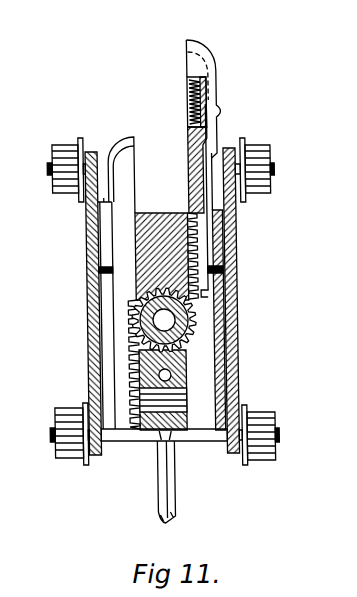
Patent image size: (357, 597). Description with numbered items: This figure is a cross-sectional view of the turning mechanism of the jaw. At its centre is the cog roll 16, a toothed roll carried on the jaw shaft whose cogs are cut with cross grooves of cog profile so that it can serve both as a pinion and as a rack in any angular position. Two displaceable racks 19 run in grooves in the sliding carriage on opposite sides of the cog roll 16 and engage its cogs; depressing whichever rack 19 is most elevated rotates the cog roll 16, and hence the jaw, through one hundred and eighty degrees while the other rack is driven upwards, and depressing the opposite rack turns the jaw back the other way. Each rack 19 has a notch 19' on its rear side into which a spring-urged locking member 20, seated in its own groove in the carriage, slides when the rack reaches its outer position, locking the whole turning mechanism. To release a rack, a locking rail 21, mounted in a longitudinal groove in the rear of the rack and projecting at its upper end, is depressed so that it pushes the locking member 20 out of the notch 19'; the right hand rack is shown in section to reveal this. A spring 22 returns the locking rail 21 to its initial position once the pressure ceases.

The cog roll 16 is at (177, 333).
The rack 19 is at (174, 277).
The notch 19' is at (116, 314).
The locking member 20 is at (97, 270).
The locking rail 21 is at (130, 147).
The spring 22 is at (189, 80).